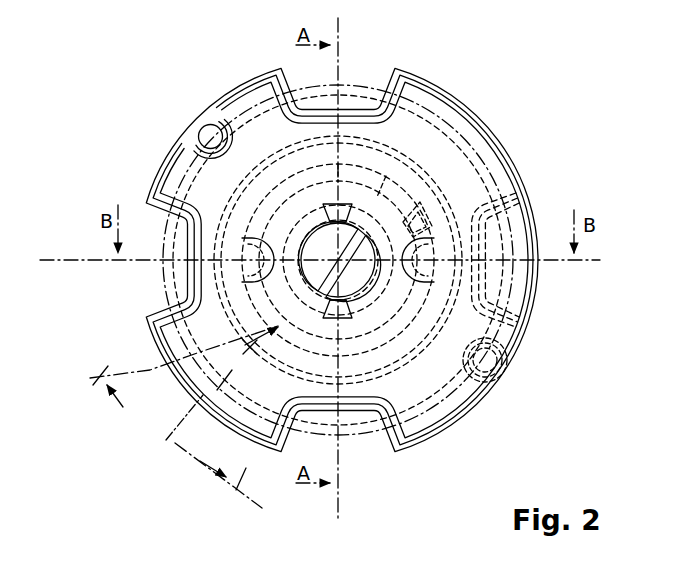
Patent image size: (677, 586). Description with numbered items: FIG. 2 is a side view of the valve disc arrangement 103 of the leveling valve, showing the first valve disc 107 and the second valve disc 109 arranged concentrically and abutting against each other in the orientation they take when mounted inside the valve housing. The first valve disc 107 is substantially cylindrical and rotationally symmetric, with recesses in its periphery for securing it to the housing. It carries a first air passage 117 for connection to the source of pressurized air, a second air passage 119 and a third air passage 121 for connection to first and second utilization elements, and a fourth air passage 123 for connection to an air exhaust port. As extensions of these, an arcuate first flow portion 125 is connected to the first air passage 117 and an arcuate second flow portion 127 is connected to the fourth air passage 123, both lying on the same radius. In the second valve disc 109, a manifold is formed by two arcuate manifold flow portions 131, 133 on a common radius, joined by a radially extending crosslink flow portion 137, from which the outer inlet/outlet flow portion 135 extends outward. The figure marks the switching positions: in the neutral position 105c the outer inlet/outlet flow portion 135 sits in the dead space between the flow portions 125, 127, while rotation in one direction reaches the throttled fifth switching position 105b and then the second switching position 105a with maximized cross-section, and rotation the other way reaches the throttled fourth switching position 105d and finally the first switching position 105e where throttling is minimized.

The valve disc arrangement 103 is at (160, 76).
The first valve disc 107 is at (473, 142).
The second valve disc 109 is at (515, 230).
The first air passage 117 is at (255, 257).
The second air passage 119 is at (335, 205).
The third air passage 121 is at (383, 302).
The fourth air passage 123 is at (423, 272).
The first flow portion 125 is at (355, 172).
The second flow portion 127 is at (350, 290).
The first manifold flow portion 131 is at (302, 236).
The second manifold flow portion 133 is at (340, 293).
The outer inlet/outlet flow portion 135 is at (170, 367).
The crosslink flow portion 137 is at (322, 288).
The second switching position 105a is at (340, 506).
The fifth switching position 105b is at (238, 483).
The neutral position 105c is at (172, 433).
The fourth switching position 105d is at (100, 372).
The first switching position 105e is at (68, 258).